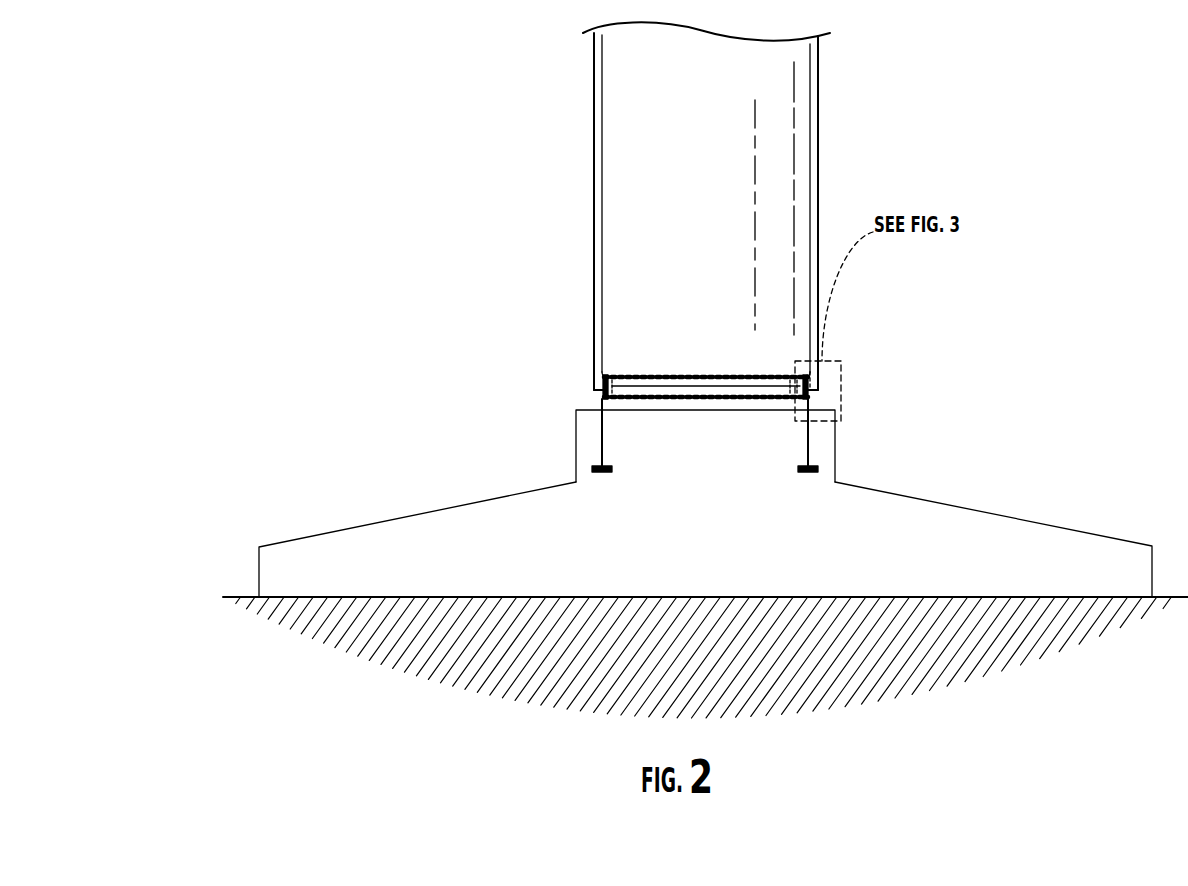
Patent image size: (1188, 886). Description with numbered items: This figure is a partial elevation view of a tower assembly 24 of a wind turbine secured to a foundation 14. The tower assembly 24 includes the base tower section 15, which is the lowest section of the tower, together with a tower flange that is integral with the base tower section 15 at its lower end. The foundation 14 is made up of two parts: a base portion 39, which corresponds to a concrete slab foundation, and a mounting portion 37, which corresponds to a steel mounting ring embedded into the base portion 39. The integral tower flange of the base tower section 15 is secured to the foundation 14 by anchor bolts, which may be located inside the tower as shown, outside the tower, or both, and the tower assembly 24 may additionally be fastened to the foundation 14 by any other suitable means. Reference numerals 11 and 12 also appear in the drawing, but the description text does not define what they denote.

The ground 11 is at (243, 596).
The tower 12 is at (593, 152).
The foundation 14 is at (933, 466).
The base tower section 15 is at (630, 254).
The tower assembly 24 is at (535, 347).
The mounting portion 37 is at (809, 440).
The base portion 39 is at (1090, 534).